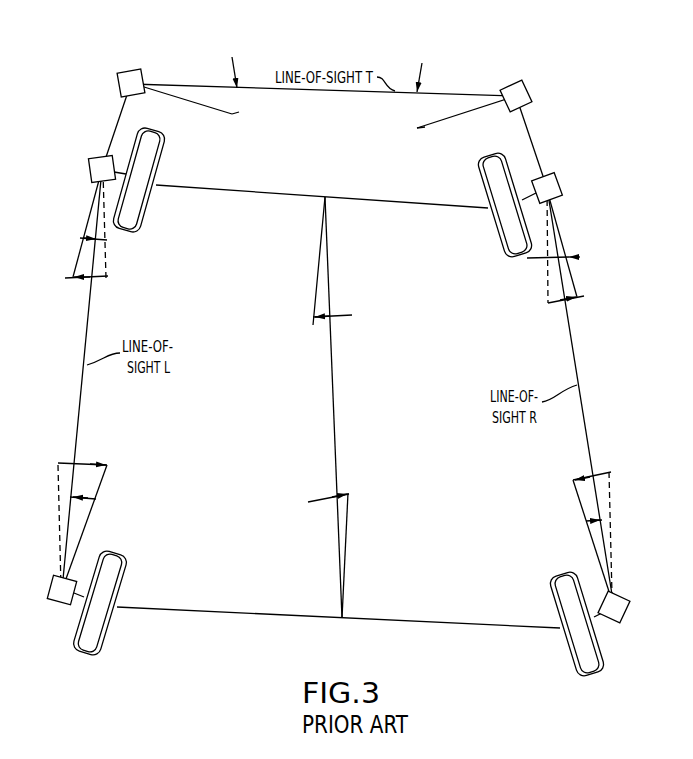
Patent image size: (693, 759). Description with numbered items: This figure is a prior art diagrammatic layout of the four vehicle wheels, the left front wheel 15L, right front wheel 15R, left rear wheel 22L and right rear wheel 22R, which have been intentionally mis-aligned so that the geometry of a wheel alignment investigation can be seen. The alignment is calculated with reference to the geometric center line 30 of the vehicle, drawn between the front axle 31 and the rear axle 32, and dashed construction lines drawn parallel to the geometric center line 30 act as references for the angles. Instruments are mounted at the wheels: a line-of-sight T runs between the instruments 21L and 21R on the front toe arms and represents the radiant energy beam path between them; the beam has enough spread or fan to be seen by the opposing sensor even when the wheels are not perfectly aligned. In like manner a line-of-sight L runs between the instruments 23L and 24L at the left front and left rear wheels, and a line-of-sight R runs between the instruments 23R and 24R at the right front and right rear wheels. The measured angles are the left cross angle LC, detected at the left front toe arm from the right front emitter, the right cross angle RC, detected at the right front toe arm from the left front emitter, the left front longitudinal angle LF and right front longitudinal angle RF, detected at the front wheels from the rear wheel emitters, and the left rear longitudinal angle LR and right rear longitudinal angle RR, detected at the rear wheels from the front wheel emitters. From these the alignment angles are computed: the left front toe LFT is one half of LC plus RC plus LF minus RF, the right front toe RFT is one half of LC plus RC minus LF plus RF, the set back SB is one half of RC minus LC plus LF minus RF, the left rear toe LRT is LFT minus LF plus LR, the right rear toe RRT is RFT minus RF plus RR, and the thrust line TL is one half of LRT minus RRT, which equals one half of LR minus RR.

The left front wheel 15L is at (153, 158).
The right front wheel 15R is at (480, 165).
The left front instrument 21L is at (120, 80).
The right front instrument 21R is at (532, 95).
The left rear wheel 22L is at (120, 556).
The right rear wheel 22R is at (565, 602).
The left front wheel instrument 23L is at (90, 158).
The right front wheel instrument 23R is at (560, 183).
The left rear wheel instrument 24L is at (58, 603).
The right rear wheel instrument 24R is at (623, 622).
The geometric center line 30 is at (336, 462).
The front axle 31 is at (256, 190).
The rear axle 32 is at (258, 613).
The left cross angle LC is at (230, 118).
The right cross angle RC is at (435, 155).
The left front longitudinal angle LF is at (83, 239).
The right front longitudinal angle RF is at (576, 257).
The left front toe LFT is at (80, 278).
The right front toe RFT is at (551, 304).
The left rear longitudinal angle LR is at (93, 498).
The right rear longitudinal angle RR is at (587, 520).
The left rear toe LRT is at (87, 463).
The right rear toe RRT is at (597, 472).
The set back SB is at (342, 316).
The thrust line TL is at (322, 497).